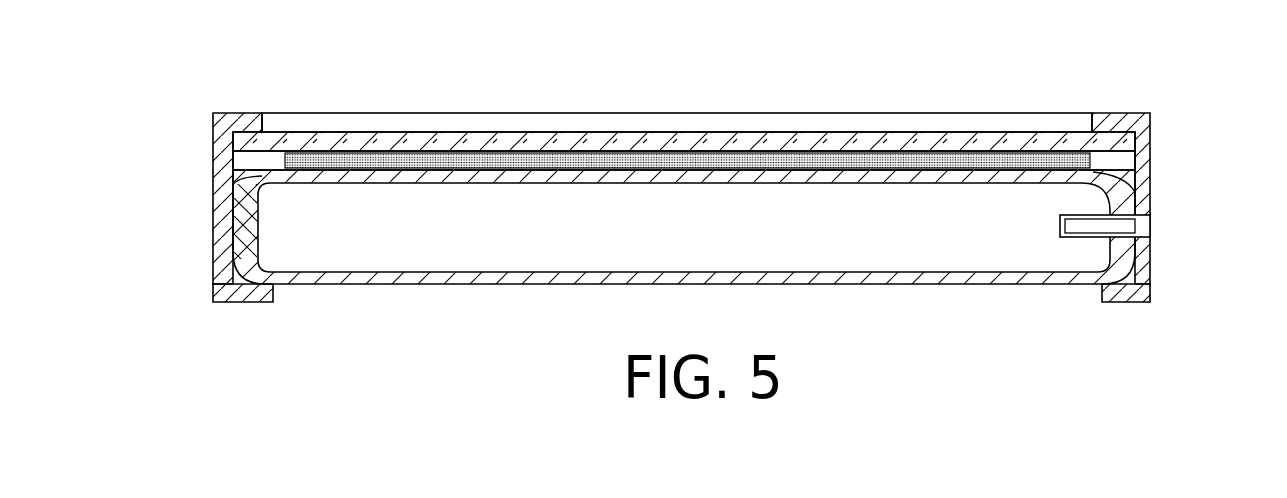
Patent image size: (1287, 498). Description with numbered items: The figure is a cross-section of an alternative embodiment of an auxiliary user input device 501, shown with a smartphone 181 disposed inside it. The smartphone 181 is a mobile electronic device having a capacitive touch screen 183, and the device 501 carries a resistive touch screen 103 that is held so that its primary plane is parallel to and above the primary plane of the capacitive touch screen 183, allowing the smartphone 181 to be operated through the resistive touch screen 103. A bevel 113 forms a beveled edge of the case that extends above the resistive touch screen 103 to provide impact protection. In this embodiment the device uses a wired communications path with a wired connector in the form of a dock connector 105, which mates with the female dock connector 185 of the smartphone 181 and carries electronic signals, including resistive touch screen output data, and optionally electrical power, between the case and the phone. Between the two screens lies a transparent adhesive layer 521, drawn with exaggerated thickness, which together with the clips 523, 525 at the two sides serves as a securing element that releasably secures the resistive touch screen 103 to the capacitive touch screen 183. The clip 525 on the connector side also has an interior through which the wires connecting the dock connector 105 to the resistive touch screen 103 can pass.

The auxiliary user input device 501 is at (173, 95).
The resistive touch screen 103 is at (712, 143).
The bevel 113 is at (820, 128).
The dock connector 105 is at (1085, 227).
The smartphone 181 is at (372, 235).
The capacitive touch screen 183 is at (455, 162).
The female dock connector 185 is at (1060, 240).
The transparent adhesive layer 521 is at (347, 158).
The clip 523 is at (225, 288).
The clip 525 is at (1140, 302).